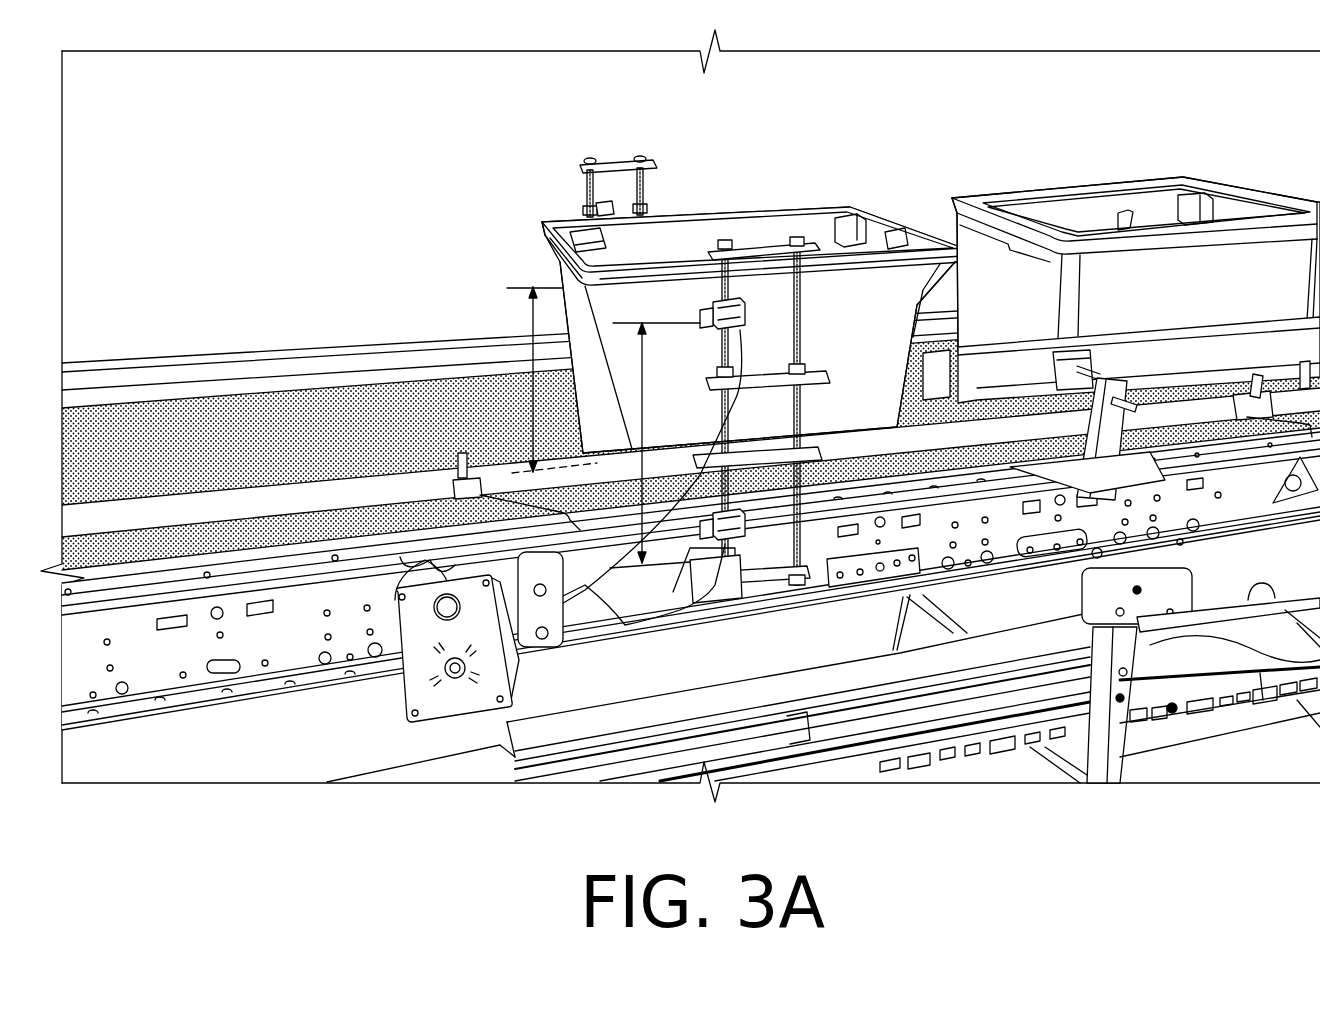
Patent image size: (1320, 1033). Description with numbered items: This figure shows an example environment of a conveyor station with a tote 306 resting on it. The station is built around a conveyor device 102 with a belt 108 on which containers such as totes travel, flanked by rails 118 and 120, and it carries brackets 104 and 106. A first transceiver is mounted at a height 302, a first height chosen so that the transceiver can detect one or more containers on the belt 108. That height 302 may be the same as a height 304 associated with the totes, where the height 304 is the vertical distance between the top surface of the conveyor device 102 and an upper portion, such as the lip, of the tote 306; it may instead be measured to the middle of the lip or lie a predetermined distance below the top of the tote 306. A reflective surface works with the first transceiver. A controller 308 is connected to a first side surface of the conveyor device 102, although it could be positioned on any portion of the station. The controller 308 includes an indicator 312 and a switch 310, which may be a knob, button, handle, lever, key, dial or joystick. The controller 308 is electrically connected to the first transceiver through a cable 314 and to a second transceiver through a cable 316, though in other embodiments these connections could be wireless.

The conveyor device 102 is at (465, 50).
The bracket 104 is at (805, 318).
The bracket 106 is at (587, 147).
The belt 108 is at (317, 420).
The rail 118 is at (240, 487).
The rail 120 is at (365, 340).
The height 302 is at (623, 390).
The height 304 is at (518, 320).
The tote 306 is at (675, 212).
The controller 308 is at (455, 722).
The switch 310 is at (433, 617).
The indicator 312 is at (470, 672).
The cable 314 is at (623, 623).
The cable 316 is at (673, 590).